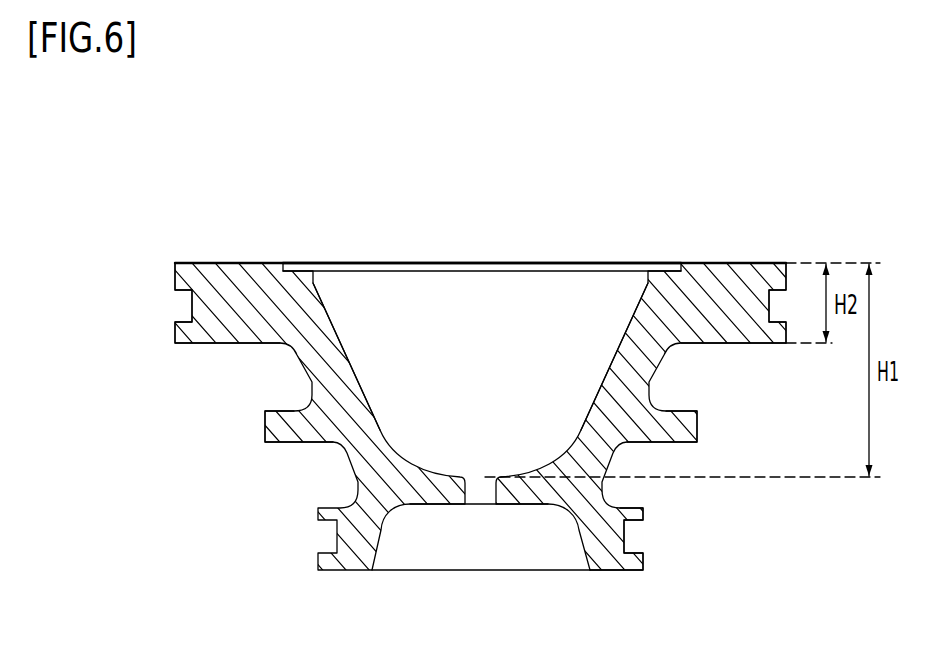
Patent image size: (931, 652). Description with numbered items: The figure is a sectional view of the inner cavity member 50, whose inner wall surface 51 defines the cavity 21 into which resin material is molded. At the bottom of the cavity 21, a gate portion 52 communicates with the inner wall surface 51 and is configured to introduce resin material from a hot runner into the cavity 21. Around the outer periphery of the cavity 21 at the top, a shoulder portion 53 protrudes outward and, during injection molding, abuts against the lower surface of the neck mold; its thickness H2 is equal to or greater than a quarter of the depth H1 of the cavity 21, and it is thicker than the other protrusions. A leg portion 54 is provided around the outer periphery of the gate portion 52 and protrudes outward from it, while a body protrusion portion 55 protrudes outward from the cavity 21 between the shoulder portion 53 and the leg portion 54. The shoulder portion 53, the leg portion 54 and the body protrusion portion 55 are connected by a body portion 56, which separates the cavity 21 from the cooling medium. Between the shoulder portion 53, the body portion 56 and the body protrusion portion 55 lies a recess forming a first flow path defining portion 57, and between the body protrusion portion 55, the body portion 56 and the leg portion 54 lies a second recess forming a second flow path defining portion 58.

The inner cavity member 50 is at (772, 243).
The cavity 21 is at (403, 300).
The inner wall surface 51 is at (620, 282).
The gate portion 52 is at (512, 504).
The shoulder portion 53 is at (764, 337).
The leg portion 54 is at (603, 553).
The body protrusion portion 55 is at (681, 426).
The body portion 56 is at (632, 358).
The first flow path defining portion 57 is at (312, 376).
The second flow path defining portion 58 is at (356, 460).